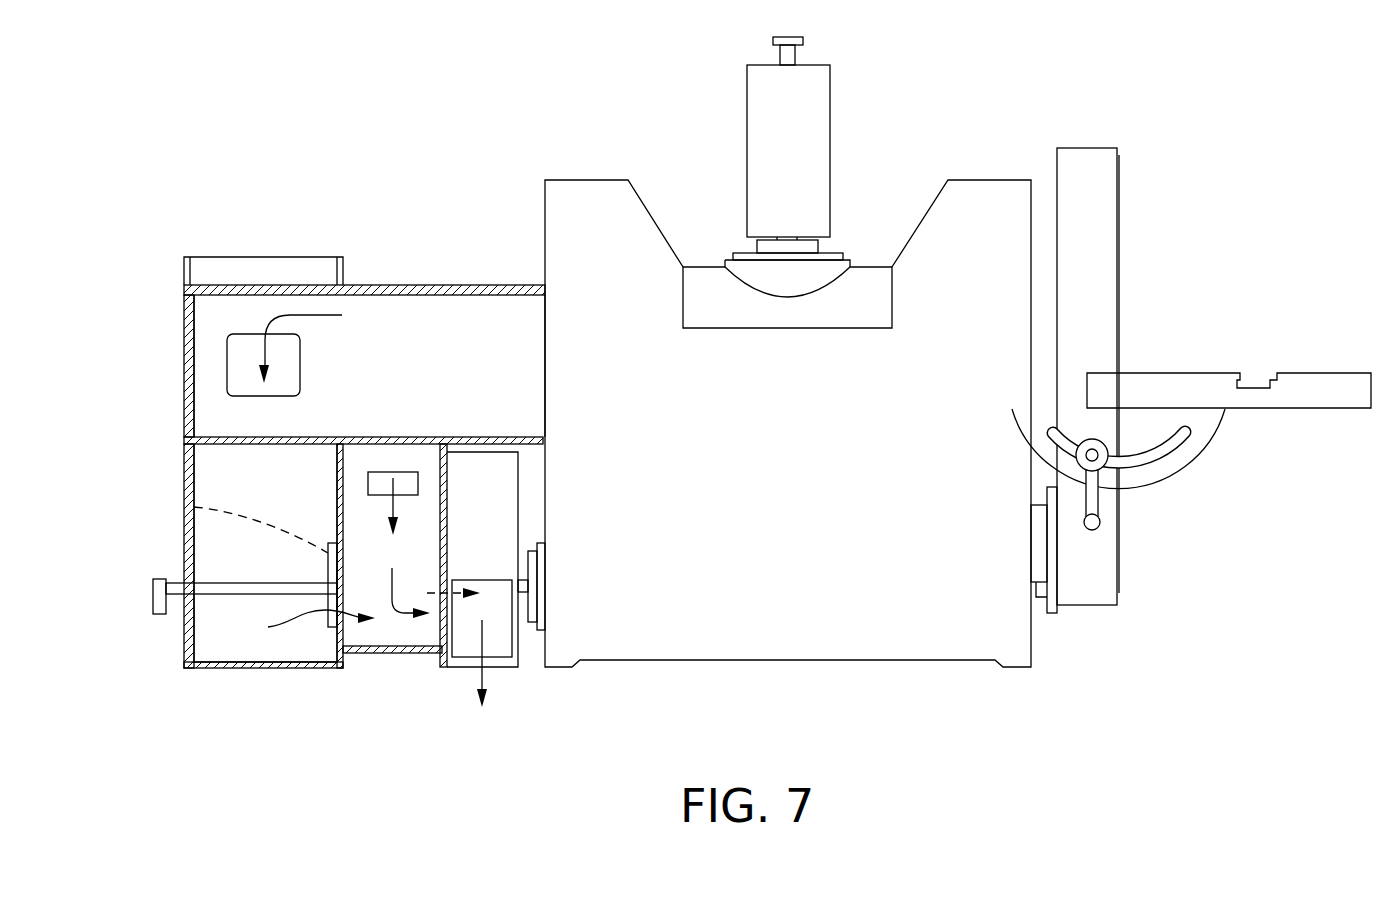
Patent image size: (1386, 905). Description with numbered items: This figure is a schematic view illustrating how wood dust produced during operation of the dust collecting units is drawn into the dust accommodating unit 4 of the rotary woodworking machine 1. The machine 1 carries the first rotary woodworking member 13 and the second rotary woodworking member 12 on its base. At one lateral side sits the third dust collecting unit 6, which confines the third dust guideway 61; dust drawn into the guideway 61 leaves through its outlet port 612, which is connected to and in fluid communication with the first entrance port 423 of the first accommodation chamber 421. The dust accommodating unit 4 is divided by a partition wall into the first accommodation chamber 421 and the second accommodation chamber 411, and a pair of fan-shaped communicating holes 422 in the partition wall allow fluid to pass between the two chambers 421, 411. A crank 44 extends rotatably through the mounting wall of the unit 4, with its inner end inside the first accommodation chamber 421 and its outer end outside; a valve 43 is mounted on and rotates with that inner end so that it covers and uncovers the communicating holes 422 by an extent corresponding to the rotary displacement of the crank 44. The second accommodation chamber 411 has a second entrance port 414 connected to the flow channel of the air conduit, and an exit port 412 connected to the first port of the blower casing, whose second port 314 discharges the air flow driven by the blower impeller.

The rotary woodworking machine 1 is at (907, 665).
The second rotary woodworking member 12 is at (812, 140).
The first rotary woodworking member 13 is at (1120, 282).
The third dust collecting unit 6 is at (383, 275).
The third dust guideway 61 is at (218, 323).
The outlet port 612 is at (247, 348).
The second entrance port 414 is at (407, 480).
The exit port 412 is at (443, 558).
The first entrance port 423 is at (203, 448).
The communicating holes 422 is at (183, 507).
The crank 44 is at (217, 583).
The first accommodation chamber 421 is at (200, 652).
The valve 43 is at (327, 618).
The dust accommodating unit 4 is at (336, 678).
The second accommodation chamber 411 is at (385, 635).
The second port 314 is at (497, 648).